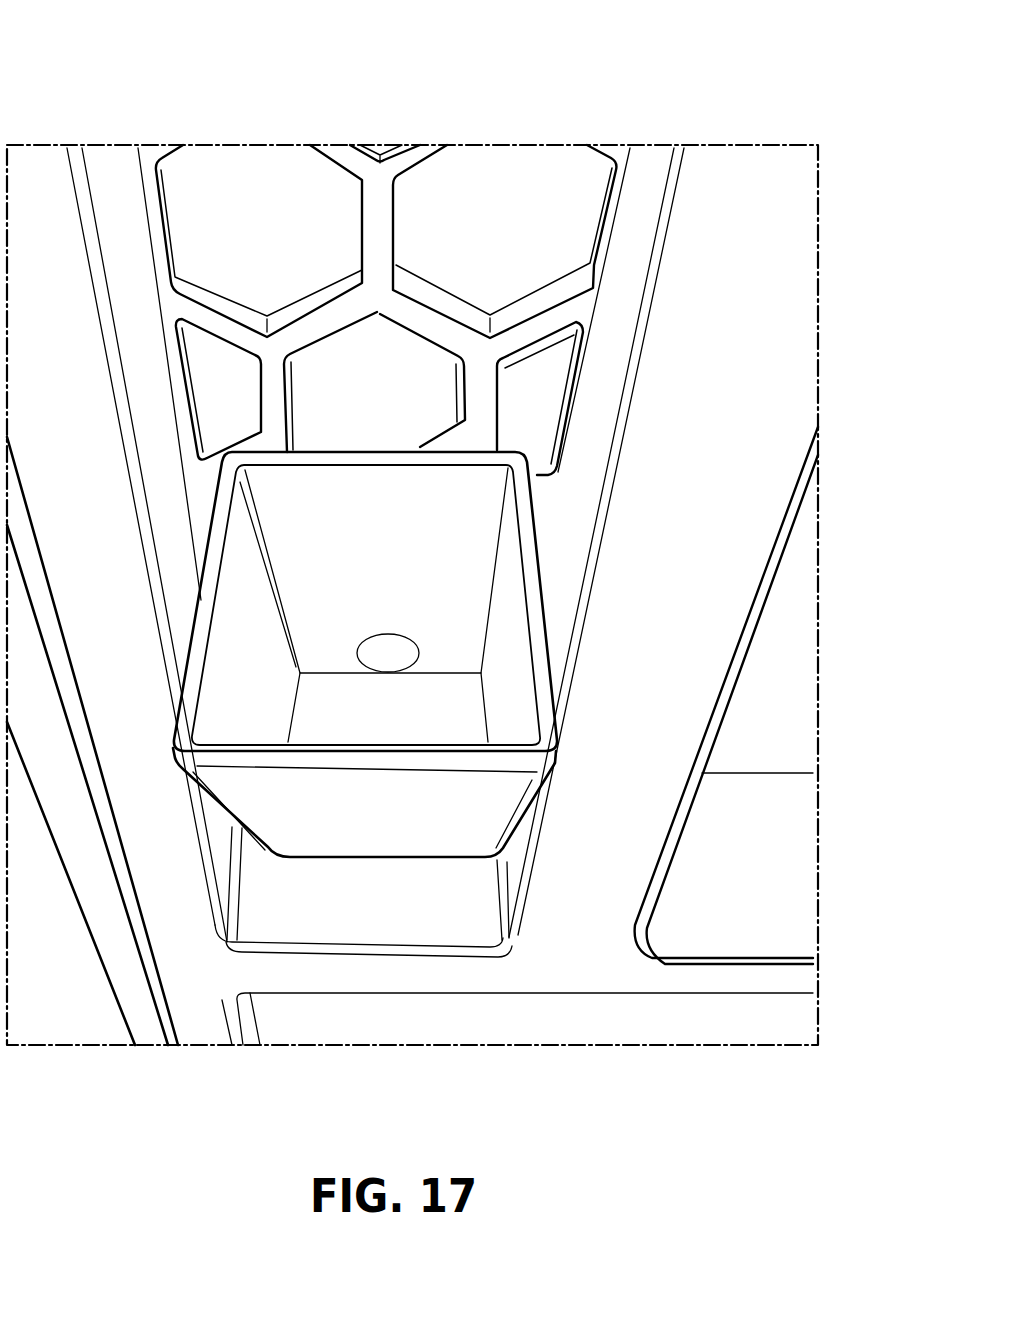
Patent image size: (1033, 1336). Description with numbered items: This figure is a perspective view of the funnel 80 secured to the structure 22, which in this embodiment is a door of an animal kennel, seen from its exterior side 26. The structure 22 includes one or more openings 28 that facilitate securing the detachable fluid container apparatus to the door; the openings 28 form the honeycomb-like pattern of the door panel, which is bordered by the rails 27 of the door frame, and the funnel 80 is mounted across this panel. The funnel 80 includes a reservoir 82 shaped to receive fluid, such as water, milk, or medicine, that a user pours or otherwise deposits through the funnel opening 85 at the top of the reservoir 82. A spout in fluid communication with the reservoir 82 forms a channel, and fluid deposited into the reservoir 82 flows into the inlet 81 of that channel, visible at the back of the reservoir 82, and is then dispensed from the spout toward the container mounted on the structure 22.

The structure 22 is at (849, 246).
The exterior side 26 is at (720, 173).
The rail 27 is at (37, 243).
The opening 28 is at (497, 240).
The funnel 80 is at (329, 405).
The inlet 81 is at (376, 650).
The reservoir 82 is at (453, 833).
The funnel opening 85 is at (478, 570).